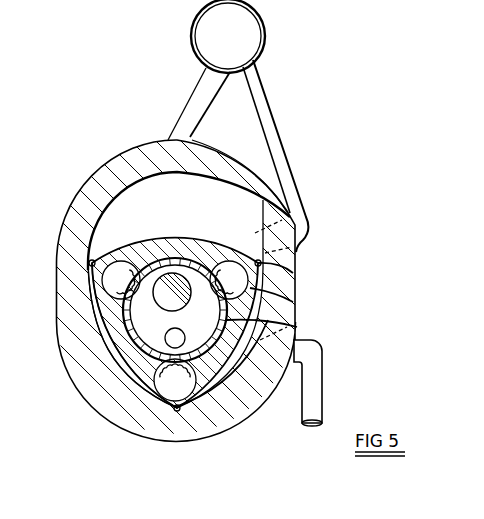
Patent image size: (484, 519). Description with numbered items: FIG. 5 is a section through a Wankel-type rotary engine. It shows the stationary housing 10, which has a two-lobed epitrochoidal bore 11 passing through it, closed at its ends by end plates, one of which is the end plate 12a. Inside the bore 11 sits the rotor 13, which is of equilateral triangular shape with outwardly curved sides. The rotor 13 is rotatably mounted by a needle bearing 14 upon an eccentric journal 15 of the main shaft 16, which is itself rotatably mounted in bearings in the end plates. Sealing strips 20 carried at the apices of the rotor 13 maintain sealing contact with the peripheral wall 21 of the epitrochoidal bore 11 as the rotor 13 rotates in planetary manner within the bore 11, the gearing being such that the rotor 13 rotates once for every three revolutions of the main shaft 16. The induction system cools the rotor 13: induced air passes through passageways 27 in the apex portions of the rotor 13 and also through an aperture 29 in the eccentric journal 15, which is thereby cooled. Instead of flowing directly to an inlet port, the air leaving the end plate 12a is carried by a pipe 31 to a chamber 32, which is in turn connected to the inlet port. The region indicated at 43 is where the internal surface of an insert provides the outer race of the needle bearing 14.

The stationary housing 10 is at (80, 190).
The epitrochoidal bore 11 is at (175, 304).
The end plate 12a is at (203, 185).
The rotor 13 is at (293, 302).
The needle bearing 14 is at (136, 358).
The eccentric journal 15 is at (138, 353).
The main shaft 16 is at (170, 305).
The sealing strips 20 is at (90, 263).
The peripheral wall 21 is at (163, 173).
The passageways 27 is at (133, 267).
The aperture 29 is at (181, 335).
The pipe 31 is at (195, 103).
The chamber 32 is at (283, 140).
The outer race region 43 is at (293, 327).